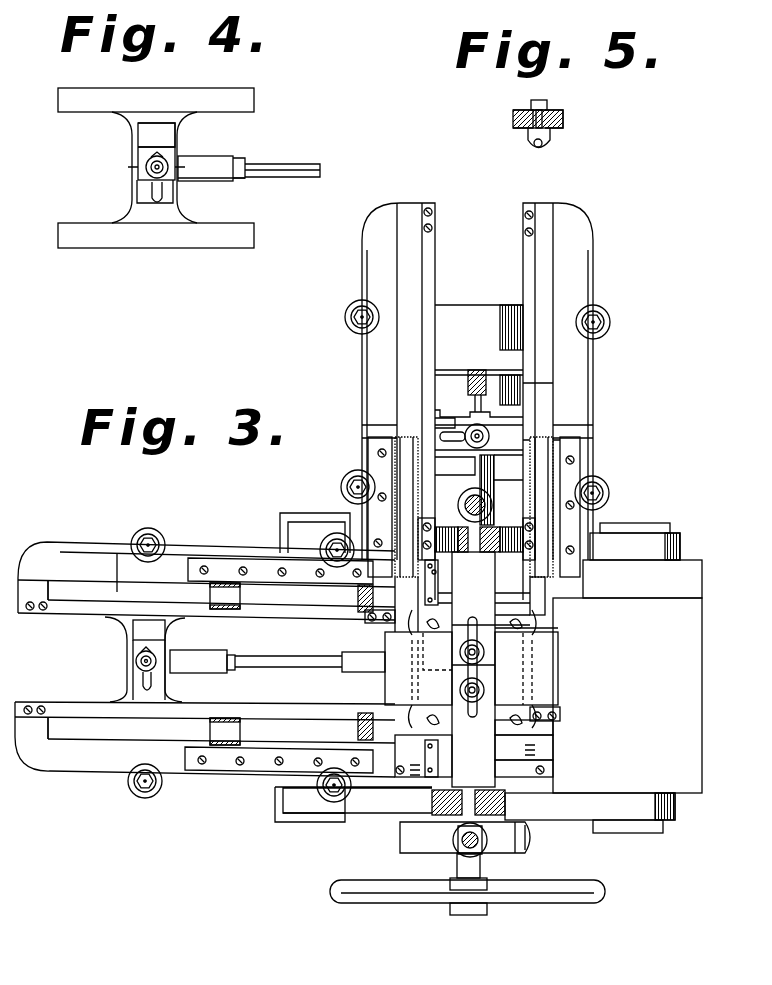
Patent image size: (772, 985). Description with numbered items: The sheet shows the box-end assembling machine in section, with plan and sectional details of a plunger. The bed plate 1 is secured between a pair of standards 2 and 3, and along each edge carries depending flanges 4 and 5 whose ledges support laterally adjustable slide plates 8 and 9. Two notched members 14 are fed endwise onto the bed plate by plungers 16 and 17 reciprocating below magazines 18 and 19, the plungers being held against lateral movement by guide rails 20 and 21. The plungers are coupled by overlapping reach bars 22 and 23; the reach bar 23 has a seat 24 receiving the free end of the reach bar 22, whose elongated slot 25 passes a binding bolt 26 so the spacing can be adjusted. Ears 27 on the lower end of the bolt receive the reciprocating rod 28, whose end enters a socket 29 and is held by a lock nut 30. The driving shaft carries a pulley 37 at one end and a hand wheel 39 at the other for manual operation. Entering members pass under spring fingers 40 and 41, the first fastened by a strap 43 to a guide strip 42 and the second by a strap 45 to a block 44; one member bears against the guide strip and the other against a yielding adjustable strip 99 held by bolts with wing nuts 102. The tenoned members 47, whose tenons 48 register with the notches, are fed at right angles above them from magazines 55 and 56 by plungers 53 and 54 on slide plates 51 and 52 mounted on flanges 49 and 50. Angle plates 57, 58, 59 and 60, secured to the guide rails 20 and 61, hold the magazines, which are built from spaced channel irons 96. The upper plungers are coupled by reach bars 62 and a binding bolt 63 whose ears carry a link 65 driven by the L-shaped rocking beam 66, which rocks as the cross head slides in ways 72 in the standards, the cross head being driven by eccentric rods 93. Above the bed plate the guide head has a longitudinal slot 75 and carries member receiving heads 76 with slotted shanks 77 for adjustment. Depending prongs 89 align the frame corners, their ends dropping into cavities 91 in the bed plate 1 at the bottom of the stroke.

In FIG. 3, the bed plate 1 is at (530, 669).
In FIG. 3, the standard 2 is at (630, 828).
In FIG. 3, the standard 3 is at (622, 538).
In FIG. 3, the depending flange 4 is at (104, 782).
In FIG. 4, the depending flange 5 is at (151, 165).
In FIG. 3, the depending flange 5 is at (62, 540).
In FIG. 3, the slide plate 8 is at (262, 742).
In FIG. 3, the slide plate 9 is at (258, 592).
In FIG. 3, the member 14 is at (553, 740).
In FIG. 3, the plunger 16 is at (52, 703).
In FIG. 4, the plunger 17 is at (193, 100).
In FIG. 3, the plunger 17 is at (232, 679).
In FIG. 3, the magazine 18 is at (228, 730).
In FIG. 3, the magazine 19 is at (210, 596).
In FIG. 3, the guide rail 20 is at (59, 660).
In FIG. 3, the guide rail 21 is at (66, 604).
In FIG. 4, the reach bar 22 is at (176, 217).
In FIG. 5, the reach bar 22 is at (522, 110).
In FIG. 4, the reach bar 23 is at (183, 137).
In FIG. 5, the reach bar 23 is at (565, 120).
In FIG. 3, the reach bar 23 is at (125, 660).
In FIG. 4, the seat 24 is at (145, 135).
In FIG. 5, the seat 24 is at (513, 119).
In FIG. 3, the seat 24 is at (160, 630).
In FIG. 4, the elongated slot 25 is at (152, 190).
In FIG. 3, the elongated slot 25 is at (152, 690).
In FIG. 4, the binding bolt 26 is at (150, 166).
In FIG. 5, the binding bolt 26 is at (550, 110).
In FIG. 3, the binding bolt 26 is at (142, 655).
In FIG. 5, the ears 27 is at (530, 140).
In FIG. 4, the reciprocating rod 28 is at (304, 168).
In FIG. 3, the reciprocating rod 28 is at (265, 658).
In FIG. 4, the socket 29 is at (236, 163).
In FIG. 4, the lock nut 30 is at (240, 176).
In FIG. 3, the lock nut 30 is at (232, 655).
In FIG. 3, the pulley 37 is at (455, 316).
In FIG. 3, the hand wheel 39 is at (522, 905).
In FIG. 3, the spring finger 40 is at (440, 602).
In FIG. 3, the spring finger 41 is at (440, 758).
In FIG. 3, the guide strip 42 is at (675, 575).
In FIG. 3, the strap 43 is at (438, 588).
In FIG. 3, the block 44 is at (548, 770).
In FIG. 3, the strap 45 is at (438, 775).
In FIG. 3, the member 47 is at (392, 622).
In FIG. 3, the tenon 48 is at (545, 607).
In FIG. 3, the flange 49 is at (362, 340).
In FIG. 3, the flange 50 is at (598, 358).
In FIG. 3, the slide plate 51 is at (415, 265).
In FIG. 3, the slide plate 52 is at (550, 385).
In FIG. 3, the plunger 53 is at (397, 418).
In FIG. 3, the plunger 54 is at (565, 421).
In FIG. 3, the magazine 55 is at (402, 432).
In FIG. 3, the magazine 56 is at (560, 442).
In FIG. 3, the angle plate 57 is at (215, 762).
In FIG. 3, the angle plate 58 is at (210, 565).
In FIG. 3, the angle plate 59 is at (375, 460).
In FIG. 3, the angle plate 60 is at (578, 470).
In FIG. 3, the guide rail 61 is at (385, 263).
In FIG. 3, the reach bar 62 is at (432, 420).
In FIG. 3, the binding bolt 63 is at (480, 432).
In FIG. 3, the link 65 is at (470, 410).
In FIG. 3, the rocking beam 66 is at (478, 374).
In FIG. 3, the ways 72 is at (424, 535).
In FIG. 3, the slot 75 is at (487, 650).
In FIG. 3, the member receiving head 76 is at (568, 660).
In FIG. 3, the shank 77 is at (475, 671).
In FIG. 3, the depending prong 89 is at (467, 669).
In FIG. 3, the cavity 91 is at (525, 624).
In FIG. 3, the eccentric rod 93 is at (467, 498).
In FIG. 3, the channel iron 96 is at (355, 600).
In FIG. 3, the yielding adjustable strip 99 is at (522, 740).
In FIG. 3, the wing nut 102 is at (530, 806).